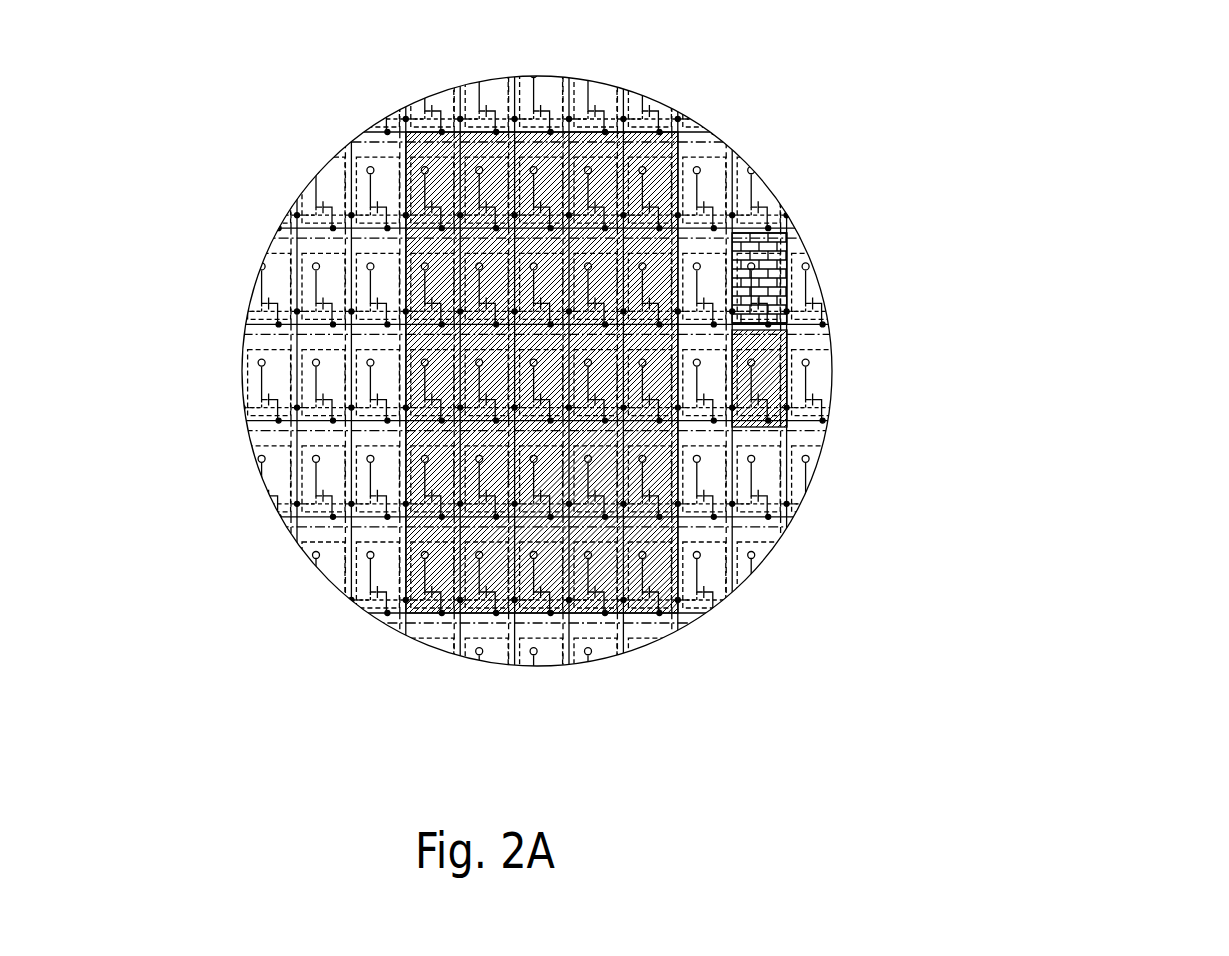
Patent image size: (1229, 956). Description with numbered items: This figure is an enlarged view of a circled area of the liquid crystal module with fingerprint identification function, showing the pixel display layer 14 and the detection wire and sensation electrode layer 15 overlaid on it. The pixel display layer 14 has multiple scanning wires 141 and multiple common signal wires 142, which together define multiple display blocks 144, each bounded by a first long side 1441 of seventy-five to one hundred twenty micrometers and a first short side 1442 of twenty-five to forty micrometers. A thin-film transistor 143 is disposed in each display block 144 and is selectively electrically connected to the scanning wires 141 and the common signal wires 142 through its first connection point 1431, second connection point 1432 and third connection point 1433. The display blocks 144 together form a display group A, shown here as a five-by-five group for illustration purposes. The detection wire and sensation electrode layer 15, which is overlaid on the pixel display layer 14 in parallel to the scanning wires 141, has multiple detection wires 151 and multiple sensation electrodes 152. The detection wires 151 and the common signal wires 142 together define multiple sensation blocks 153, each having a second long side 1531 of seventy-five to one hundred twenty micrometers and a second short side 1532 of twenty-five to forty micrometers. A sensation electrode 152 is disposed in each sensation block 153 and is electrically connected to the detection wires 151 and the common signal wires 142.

The pixel display layer 14 is at (614, 478).
The scanning wire 141 is at (918, 331).
The common signal wire 142 is at (787, 240).
The thin-film transistor 143 is at (1057, 170).
The first connection point 1431 is at (678, 215).
The second connection point 1432 is at (700, 186).
The third connection point 1433 is at (742, 225).
The display block 144 is at (957, 210).
The first long side 1441 is at (788, 250).
The first short side 1442 is at (757, 313).
The detection wire and sensation electrode layer 15 is at (1060, 367).
The detection wire 151 is at (777, 523).
The sensation electrode 152 is at (780, 447).
The sensation block 153 is at (967, 343).
The second long side 1531 is at (788, 352).
The second short side 1532 is at (788, 422).
The 5×5 display group A is at (700, 612).